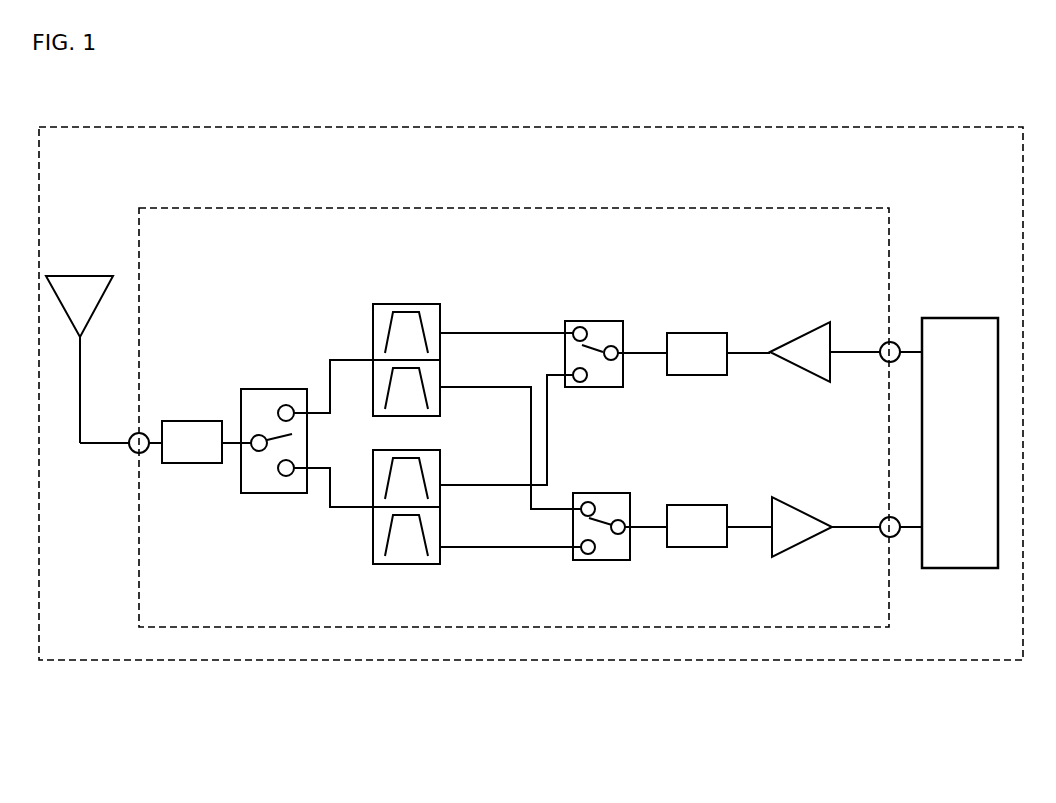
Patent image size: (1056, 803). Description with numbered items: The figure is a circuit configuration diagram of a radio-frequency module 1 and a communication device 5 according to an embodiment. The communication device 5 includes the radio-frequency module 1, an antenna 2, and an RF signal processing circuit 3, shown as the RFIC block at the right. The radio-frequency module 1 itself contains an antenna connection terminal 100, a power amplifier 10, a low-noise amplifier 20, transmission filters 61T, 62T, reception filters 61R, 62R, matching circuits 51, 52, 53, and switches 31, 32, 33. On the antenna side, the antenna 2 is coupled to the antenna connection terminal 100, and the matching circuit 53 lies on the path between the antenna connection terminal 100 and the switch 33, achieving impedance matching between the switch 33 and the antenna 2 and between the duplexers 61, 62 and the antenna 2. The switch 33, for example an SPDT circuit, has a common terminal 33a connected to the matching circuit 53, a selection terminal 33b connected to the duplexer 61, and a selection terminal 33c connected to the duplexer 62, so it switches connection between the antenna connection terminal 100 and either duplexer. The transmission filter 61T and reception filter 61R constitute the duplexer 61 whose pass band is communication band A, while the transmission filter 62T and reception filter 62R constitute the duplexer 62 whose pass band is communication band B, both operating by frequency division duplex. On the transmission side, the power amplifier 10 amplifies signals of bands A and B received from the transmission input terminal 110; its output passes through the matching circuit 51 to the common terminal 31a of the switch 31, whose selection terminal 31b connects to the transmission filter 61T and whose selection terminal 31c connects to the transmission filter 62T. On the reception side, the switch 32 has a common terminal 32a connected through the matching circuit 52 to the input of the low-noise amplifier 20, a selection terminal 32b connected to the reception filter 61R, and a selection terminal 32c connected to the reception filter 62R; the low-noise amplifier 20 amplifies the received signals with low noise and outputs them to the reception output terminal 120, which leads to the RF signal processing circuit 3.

The radio-frequency module 1 is at (827, 208).
The antenna 2 is at (105, 275).
The RF signal processing circuit 3 is at (952, 318).
The communication device 5 is at (962, 127).
The power amplifier 10 is at (800, 321).
The low-noise amplifier 20 is at (806, 510).
The switch 31 is at (603, 343).
The common terminal 31a is at (616, 346).
The selection terminal 31b is at (577, 327).
The selection terminal 31c is at (577, 382).
The switch 32 is at (611, 515).
The common terminal 32a is at (622, 520).
The selection terminal 32b is at (584, 502).
The selection terminal 32c is at (585, 554).
The switch 33 is at (275, 431).
The common terminal 33a is at (260, 434).
The selection terminal 33b is at (290, 406).
The selection terminal 33c is at (290, 476).
The matching circuit 51 is at (700, 333).
The matching circuit 52 is at (705, 505).
The matching circuit 53 is at (198, 421).
The duplexer 61 is at (461, 359).
The transmission filter 61T is at (441, 338).
The reception filter 61R is at (441, 378).
The duplexer 62 is at (461, 508).
The transmission filter 62T is at (441, 491).
The reception filter 62R is at (441, 538).
The antenna connection terminal 100 is at (130, 451).
The transmission input terminal 110 is at (882, 345).
The reception output terminal 120 is at (880, 535).